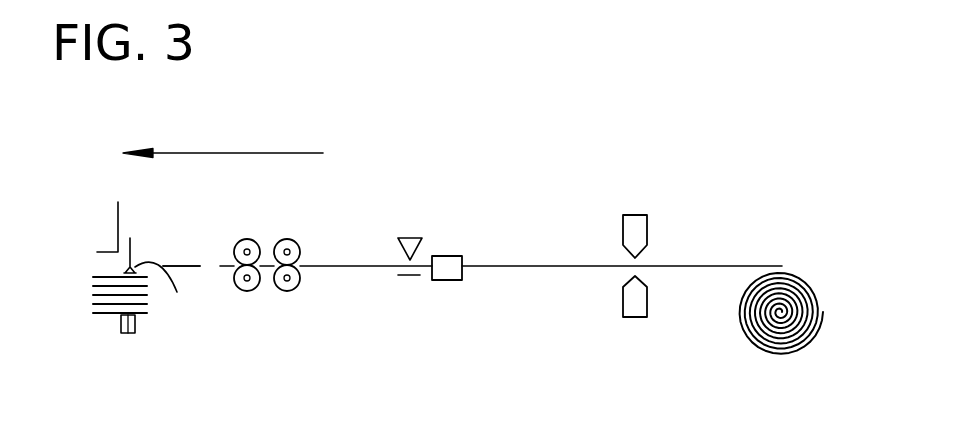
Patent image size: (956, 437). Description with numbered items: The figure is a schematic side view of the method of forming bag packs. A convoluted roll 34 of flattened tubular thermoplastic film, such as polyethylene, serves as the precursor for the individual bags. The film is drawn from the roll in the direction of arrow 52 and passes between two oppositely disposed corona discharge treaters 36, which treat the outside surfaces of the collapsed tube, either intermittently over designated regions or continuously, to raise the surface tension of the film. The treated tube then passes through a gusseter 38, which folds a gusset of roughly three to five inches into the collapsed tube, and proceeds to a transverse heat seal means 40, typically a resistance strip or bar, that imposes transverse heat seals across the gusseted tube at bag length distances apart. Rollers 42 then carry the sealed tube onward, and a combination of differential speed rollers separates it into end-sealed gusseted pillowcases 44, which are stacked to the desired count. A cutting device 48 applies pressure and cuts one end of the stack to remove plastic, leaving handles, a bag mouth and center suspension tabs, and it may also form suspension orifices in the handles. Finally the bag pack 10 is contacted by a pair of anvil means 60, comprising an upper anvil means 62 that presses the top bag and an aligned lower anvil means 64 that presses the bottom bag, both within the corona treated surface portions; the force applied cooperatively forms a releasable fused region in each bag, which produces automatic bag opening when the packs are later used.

The bag pack 10 is at (105, 315).
The convoluted roll 34 is at (782, 357).
The corona discharge treaters 36 is at (635, 214).
The gusseter 38 is at (450, 255).
The transverse heat seal means 40 is at (413, 236).
The feed rollers 42 is at (237, 243).
The end-sealed gusseted pillowcases 44 is at (192, 262).
The cutting device 48 is at (117, 233).
The arrow 52 is at (223, 131).
The pair of anvil means 60 is at (135, 323).
The upper anvil means 62 is at (125, 268).
The lower anvil means 64 is at (128, 334).